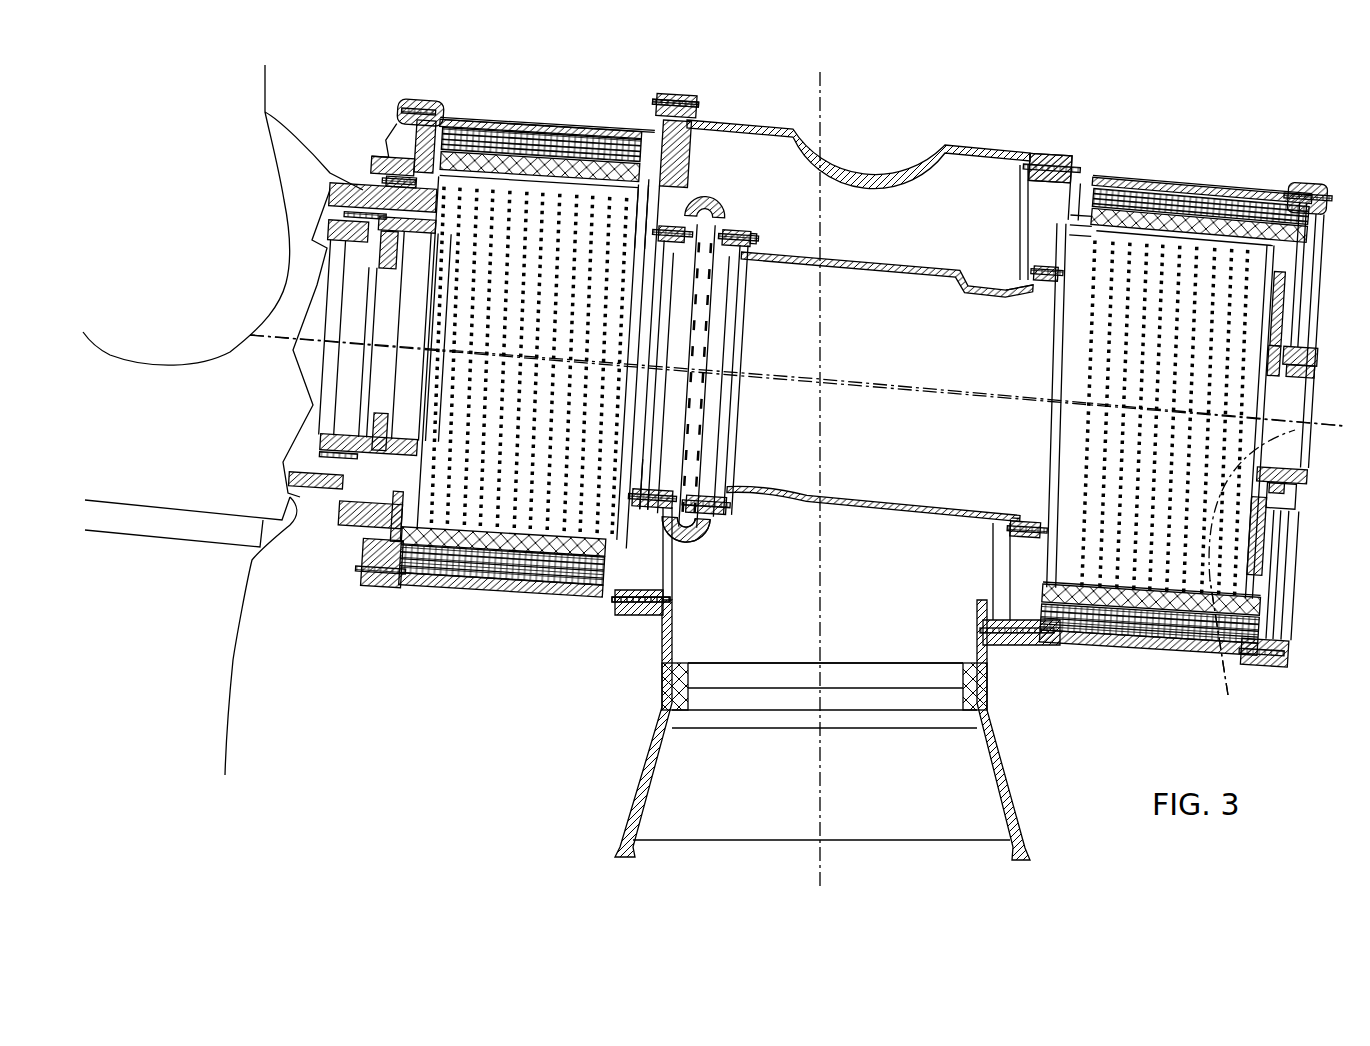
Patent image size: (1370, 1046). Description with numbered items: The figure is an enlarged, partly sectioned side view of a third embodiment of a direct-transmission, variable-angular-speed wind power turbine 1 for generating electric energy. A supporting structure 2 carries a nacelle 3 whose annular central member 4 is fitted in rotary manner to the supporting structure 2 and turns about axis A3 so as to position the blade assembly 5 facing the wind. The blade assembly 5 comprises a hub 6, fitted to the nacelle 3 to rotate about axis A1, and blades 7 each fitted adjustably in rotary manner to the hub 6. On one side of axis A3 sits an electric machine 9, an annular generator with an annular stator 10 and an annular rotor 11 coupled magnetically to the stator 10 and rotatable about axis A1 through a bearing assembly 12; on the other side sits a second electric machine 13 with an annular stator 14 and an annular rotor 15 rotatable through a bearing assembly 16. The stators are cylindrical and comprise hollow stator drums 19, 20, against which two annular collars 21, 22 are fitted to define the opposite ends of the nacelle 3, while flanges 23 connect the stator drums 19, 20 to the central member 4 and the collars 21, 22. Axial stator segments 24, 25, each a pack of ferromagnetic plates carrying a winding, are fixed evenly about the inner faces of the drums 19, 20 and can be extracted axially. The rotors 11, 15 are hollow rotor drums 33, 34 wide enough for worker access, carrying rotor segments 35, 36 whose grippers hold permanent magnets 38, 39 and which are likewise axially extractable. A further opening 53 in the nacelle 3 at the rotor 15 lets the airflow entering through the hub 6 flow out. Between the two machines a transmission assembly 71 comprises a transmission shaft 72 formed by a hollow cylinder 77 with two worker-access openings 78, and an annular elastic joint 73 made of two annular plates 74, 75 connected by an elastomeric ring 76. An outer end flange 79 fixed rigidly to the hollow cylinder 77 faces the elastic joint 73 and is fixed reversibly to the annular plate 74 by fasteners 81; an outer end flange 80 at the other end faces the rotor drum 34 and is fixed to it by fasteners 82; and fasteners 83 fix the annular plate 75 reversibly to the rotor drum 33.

The wind power turbine 1 is at (487, 687).
The supporting structure 2 is at (985, 797).
The nacelle 3 is at (1245, 122).
The annular central member 4 is at (1000, 150).
The blade assembly 5 is at (285, 607).
The hub 6 is at (288, 520).
The blades 7 is at (247, 90).
The electric machine 9 is at (575, 120).
The annular stator 10 is at (593, 127).
The annular rotor 11 is at (660, 210).
The bearing assembly 12 is at (403, 160).
The electric machine 13 is at (1190, 660).
The annular stator 14 is at (1255, 182).
The annular rotor 15 is at (1082, 250).
The bearing assembly 16 is at (1288, 456).
The stator drum 19 is at (623, 123).
The stator drum 20 is at (1100, 173).
The annular collar 21 is at (403, 127).
The annular collar 22 is at (1302, 342).
The flanges 23 is at (432, 100).
The axial stator segments 24 is at (670, 122).
The axial stator segments 25 is at (1082, 160).
The rotor drum 33 is at (665, 185).
The rotor drum 34 is at (1085, 230).
The rotor segments 35 is at (660, 152).
The rotor segments 36 is at (1085, 215).
The permanent magnets 38 is at (487, 125).
The permanent magnets 39 is at (1172, 205).
The further opening 53 is at (1310, 462).
The transmission assembly 71 is at (850, 580).
The transmission shaft 72 is at (862, 251).
The annular elastic joint 73 is at (690, 530).
The annular plate 74 is at (708, 508).
The annular plate 75 is at (655, 522).
The ring 76 is at (692, 547).
The hollow cylinder 77 is at (878, 510).
The openings 78 is at (989, 278).
The outer end flange 79 is at (742, 262).
The outer end flange 80 is at (1035, 286).
The fasteners 81 is at (752, 245).
The fasteners 82 is at (1052, 295).
The fasteners 83 is at (660, 238).
The axis A1 is at (1219, 654).
The axis A3 is at (833, 133).